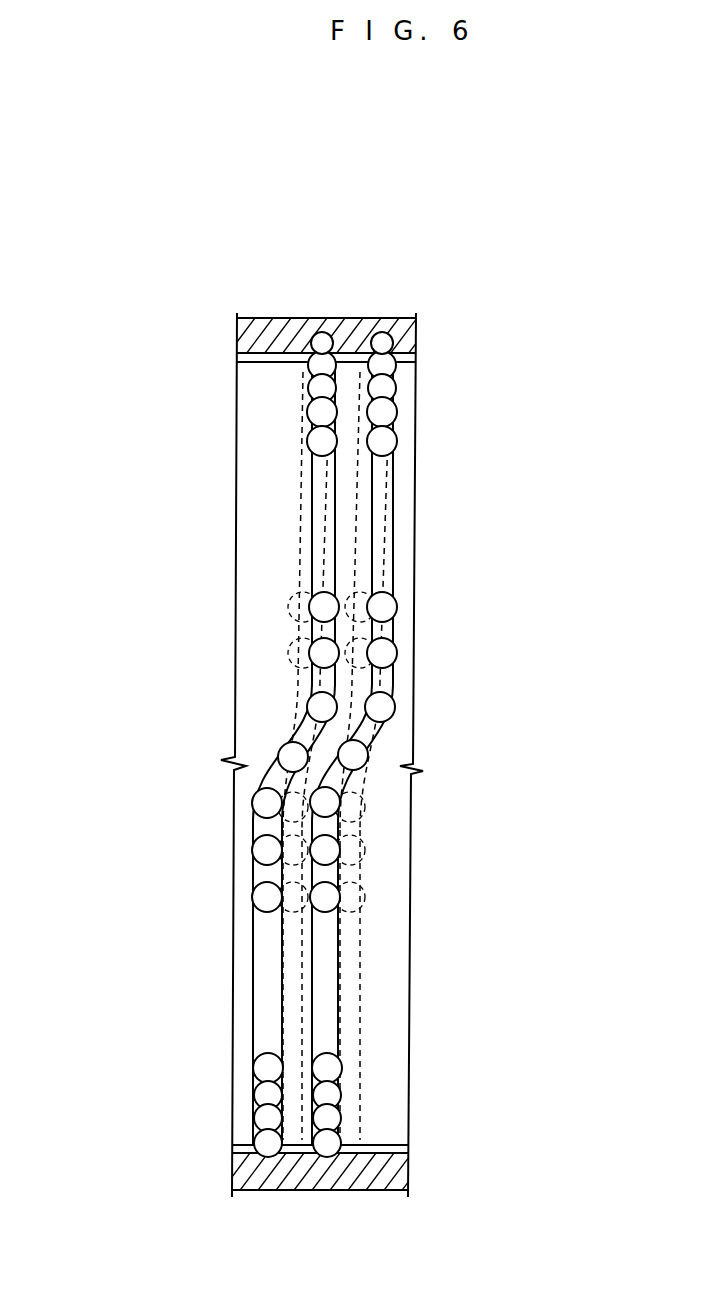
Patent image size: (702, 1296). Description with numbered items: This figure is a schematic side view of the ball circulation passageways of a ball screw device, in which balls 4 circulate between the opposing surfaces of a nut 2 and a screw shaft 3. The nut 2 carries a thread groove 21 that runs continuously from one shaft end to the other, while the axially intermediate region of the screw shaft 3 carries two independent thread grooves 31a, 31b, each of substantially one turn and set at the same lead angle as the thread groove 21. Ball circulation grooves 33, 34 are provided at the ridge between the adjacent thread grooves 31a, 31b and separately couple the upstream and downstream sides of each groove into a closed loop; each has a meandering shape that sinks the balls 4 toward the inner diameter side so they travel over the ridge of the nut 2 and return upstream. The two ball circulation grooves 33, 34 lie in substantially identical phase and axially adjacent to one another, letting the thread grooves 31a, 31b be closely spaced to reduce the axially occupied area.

The nut 2 is at (290, 325).
The thread groove 21 is at (372, 335).
The screw shaft 3 is at (252, 429).
The balls 4 is at (322, 440).
The thread groove 31a is at (315, 525).
The thread groove 31b is at (388, 543).
The ball circulation groove 33 is at (278, 778).
The ball circulation groove 34 is at (383, 742).